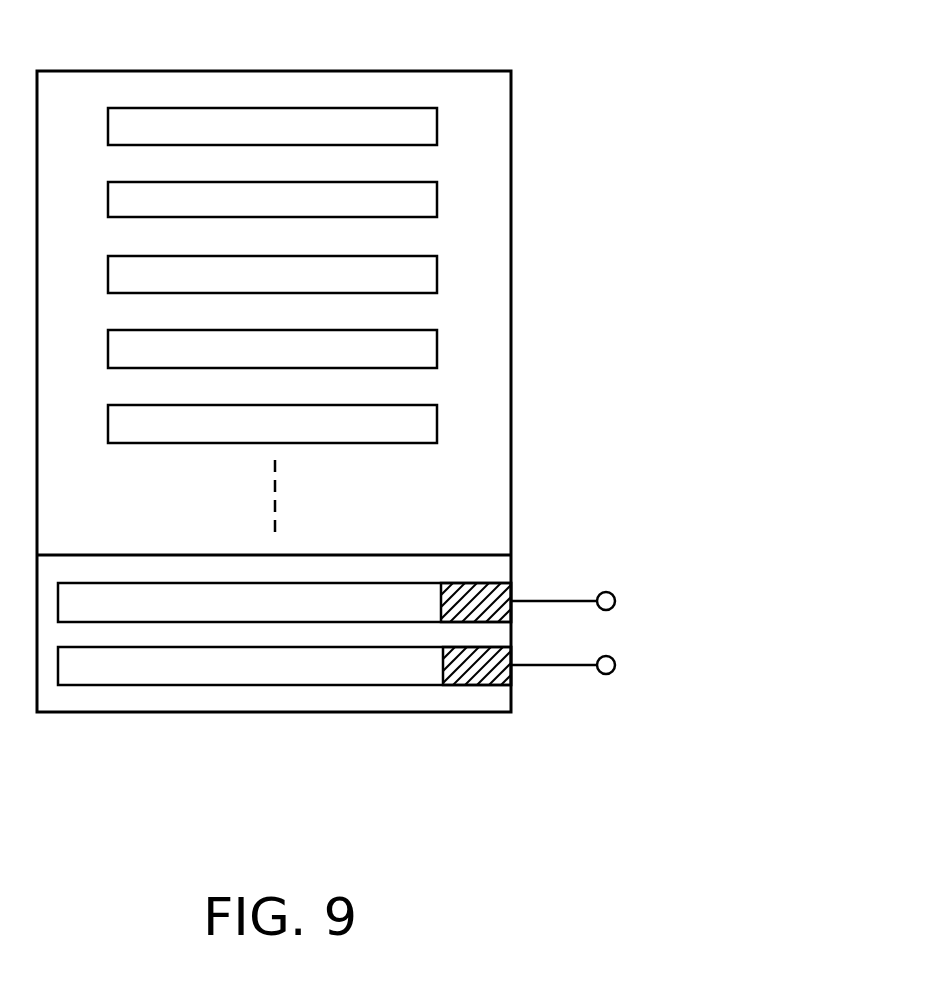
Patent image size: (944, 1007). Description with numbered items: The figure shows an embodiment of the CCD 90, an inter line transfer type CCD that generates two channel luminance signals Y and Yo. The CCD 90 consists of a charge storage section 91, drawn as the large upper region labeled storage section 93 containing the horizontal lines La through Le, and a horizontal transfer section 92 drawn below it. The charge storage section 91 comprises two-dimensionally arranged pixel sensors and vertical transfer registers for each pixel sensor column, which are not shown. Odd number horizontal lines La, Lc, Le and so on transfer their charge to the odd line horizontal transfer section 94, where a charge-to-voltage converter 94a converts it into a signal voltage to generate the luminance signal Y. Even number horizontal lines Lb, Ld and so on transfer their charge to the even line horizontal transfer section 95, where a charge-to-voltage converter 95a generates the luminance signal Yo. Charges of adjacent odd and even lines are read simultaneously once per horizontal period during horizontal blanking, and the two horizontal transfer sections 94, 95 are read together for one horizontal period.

The CCD 90 is at (175, 71).
The charge storage section 91 is at (518, 428).
The horizontal transfer section 92 is at (360, 704).
The storage section 93 is at (482, 159).
The odd line horizontal transfer section 94 is at (339, 649).
The charge-to-voltage converter 94a is at (500, 598).
The even line horizontal transfer section 95 is at (298, 706).
The charge-to-voltage converter 95a is at (475, 676).